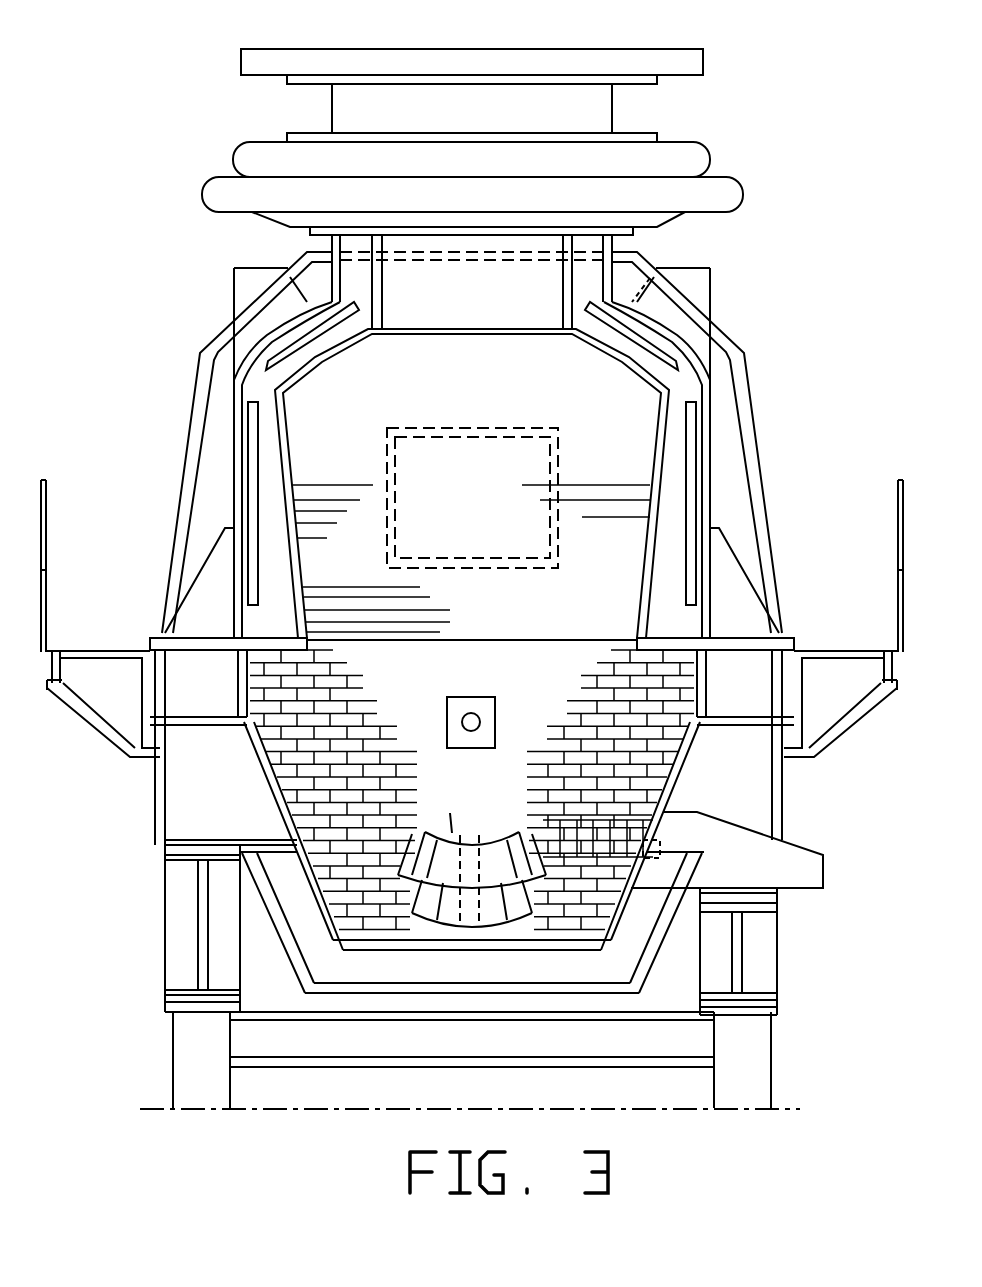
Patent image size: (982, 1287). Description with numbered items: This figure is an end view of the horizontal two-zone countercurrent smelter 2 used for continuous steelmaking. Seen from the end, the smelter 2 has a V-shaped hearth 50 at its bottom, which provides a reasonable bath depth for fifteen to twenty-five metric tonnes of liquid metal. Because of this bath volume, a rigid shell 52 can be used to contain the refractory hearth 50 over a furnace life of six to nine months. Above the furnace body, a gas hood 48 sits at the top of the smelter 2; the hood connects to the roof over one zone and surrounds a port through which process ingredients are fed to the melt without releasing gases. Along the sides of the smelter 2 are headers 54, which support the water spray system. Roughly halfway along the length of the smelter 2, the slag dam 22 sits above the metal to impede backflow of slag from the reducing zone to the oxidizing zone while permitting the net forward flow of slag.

The smelter 2 is at (181, 463).
The slag dam 22 is at (352, 485).
The gas hood 48 is at (216, 199).
The hearth 50 is at (449, 918).
The rigid shell 52 is at (246, 757).
The headers 54 is at (693, 417).